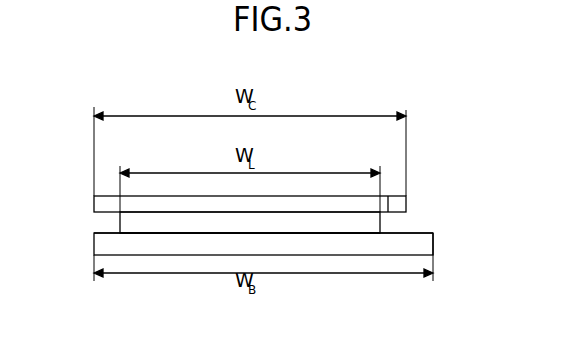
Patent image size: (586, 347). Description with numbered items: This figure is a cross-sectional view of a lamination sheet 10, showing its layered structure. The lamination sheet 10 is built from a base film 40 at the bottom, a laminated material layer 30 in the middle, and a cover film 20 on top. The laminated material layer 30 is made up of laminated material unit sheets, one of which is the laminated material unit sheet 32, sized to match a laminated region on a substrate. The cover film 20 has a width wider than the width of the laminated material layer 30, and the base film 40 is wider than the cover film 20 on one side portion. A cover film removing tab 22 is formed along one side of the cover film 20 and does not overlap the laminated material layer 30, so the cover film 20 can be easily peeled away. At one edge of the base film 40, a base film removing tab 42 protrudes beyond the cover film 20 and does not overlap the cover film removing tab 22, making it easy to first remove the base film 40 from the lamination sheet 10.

The lamination sheet 10 is at (434, 250).
The cover film 20 is at (407, 203).
The cover film removing tab 22 is at (388, 196).
The laminated material layer 30 is at (122, 227).
The laminated material unit sheet 32 is at (360, 223).
The base film 40 is at (103, 245).
The base film removing tab 42 is at (408, 233).